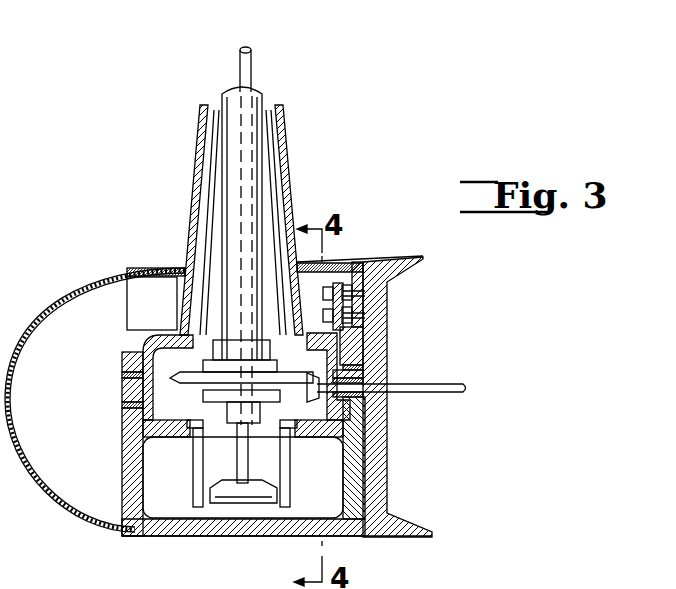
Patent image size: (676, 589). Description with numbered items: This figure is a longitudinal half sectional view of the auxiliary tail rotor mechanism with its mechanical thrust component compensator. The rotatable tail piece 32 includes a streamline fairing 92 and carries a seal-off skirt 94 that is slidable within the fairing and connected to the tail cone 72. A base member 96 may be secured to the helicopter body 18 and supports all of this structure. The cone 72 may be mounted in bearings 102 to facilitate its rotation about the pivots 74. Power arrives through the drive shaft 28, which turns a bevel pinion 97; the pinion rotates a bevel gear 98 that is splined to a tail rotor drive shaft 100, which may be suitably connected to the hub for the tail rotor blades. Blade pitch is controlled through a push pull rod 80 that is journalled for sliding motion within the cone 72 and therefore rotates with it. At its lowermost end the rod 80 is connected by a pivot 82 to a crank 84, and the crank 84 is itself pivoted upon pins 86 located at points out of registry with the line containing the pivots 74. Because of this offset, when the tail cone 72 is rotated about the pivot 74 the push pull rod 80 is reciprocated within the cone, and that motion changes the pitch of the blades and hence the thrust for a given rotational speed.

The helicopter body 18 is at (420, 262).
The drive shaft 28 is at (457, 384).
The rotatable tail piece 32 is at (106, 489).
The tail cone 72 is at (283, 140).
The pivots 74 is at (122, 394).
The push pull rod 80 is at (238, 78).
The pivot 82 is at (278, 506).
The crank 84 is at (200, 500).
The pins 86 is at (192, 428).
The streamline fairing 92 is at (90, 278).
The seal-off skirt 94 is at (170, 266).
The base member 96 is at (122, 482).
The bevel pinion 97 is at (316, 396).
The bevel gear 98 is at (290, 362).
The tail rotor drive shaft 100 is at (262, 104).
The bearings 102 is at (122, 375).